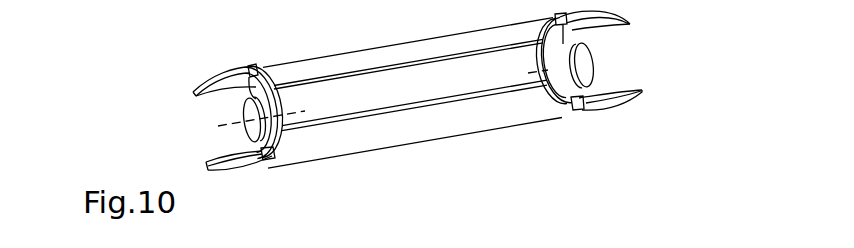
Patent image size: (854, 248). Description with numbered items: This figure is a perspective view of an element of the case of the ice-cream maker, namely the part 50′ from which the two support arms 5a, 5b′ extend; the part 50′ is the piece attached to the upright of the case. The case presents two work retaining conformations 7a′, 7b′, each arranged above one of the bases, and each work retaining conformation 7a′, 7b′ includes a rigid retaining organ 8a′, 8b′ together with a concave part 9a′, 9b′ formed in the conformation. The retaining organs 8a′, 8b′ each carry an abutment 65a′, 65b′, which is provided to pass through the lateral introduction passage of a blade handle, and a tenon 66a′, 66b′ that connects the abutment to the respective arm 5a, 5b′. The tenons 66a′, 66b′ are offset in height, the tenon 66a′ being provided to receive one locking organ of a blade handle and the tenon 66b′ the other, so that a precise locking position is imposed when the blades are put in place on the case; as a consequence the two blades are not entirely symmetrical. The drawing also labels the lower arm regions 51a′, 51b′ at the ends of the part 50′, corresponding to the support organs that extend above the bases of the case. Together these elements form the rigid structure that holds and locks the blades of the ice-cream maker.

The part 50′ is at (474, 152).
The support arm 5b′ is at (308, 72).
The support arm 5a is at (530, 33).
The tenon 66b′ is at (247, 92).
The abutment 65b′ is at (246, 131).
The concave part 9b′ is at (219, 108).
The work retaining conformation 7b′ is at (222, 98).
The rigid retaining organ 8b′ is at (236, 143).
The left lower arm 51b′ is at (254, 185).
The tenon 66a′ is at (568, 54).
The abutment 65a′ is at (608, 81).
The concave part 9a′ is at (623, 33).
The work retaining conformation 7a′ is at (616, 54).
The rigid retaining organ 8a′ is at (592, 66).
The right lower arm 51a′ is at (620, 127).